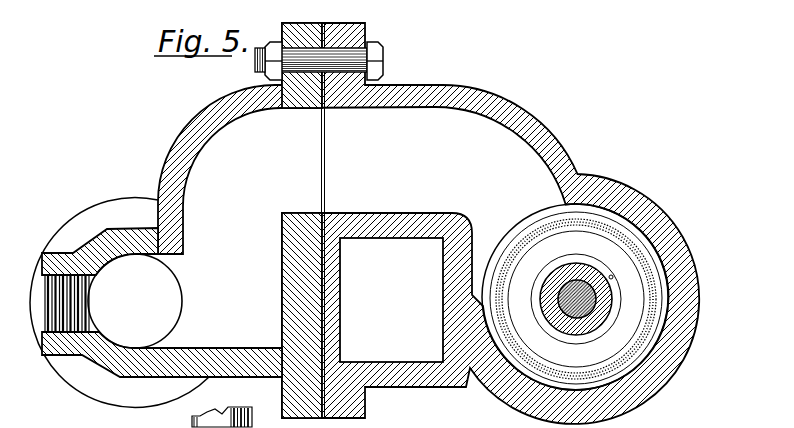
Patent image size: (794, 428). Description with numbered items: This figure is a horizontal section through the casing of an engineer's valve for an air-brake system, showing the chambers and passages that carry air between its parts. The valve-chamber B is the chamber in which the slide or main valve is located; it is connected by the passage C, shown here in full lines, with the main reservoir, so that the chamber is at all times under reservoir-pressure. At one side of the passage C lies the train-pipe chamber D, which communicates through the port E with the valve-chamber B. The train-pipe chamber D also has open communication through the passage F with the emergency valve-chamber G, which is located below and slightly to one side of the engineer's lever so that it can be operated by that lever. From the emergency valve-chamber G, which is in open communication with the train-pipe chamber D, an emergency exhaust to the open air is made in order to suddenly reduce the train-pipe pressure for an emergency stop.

The passage F is at (364, 223).
The train-pipe chamber D is at (162, 302).
The valve-chamber B is at (391, 300).
The emergency valve-chamber G is at (575, 297).
The passage C is at (576, 299).
The port E is at (576, 299).